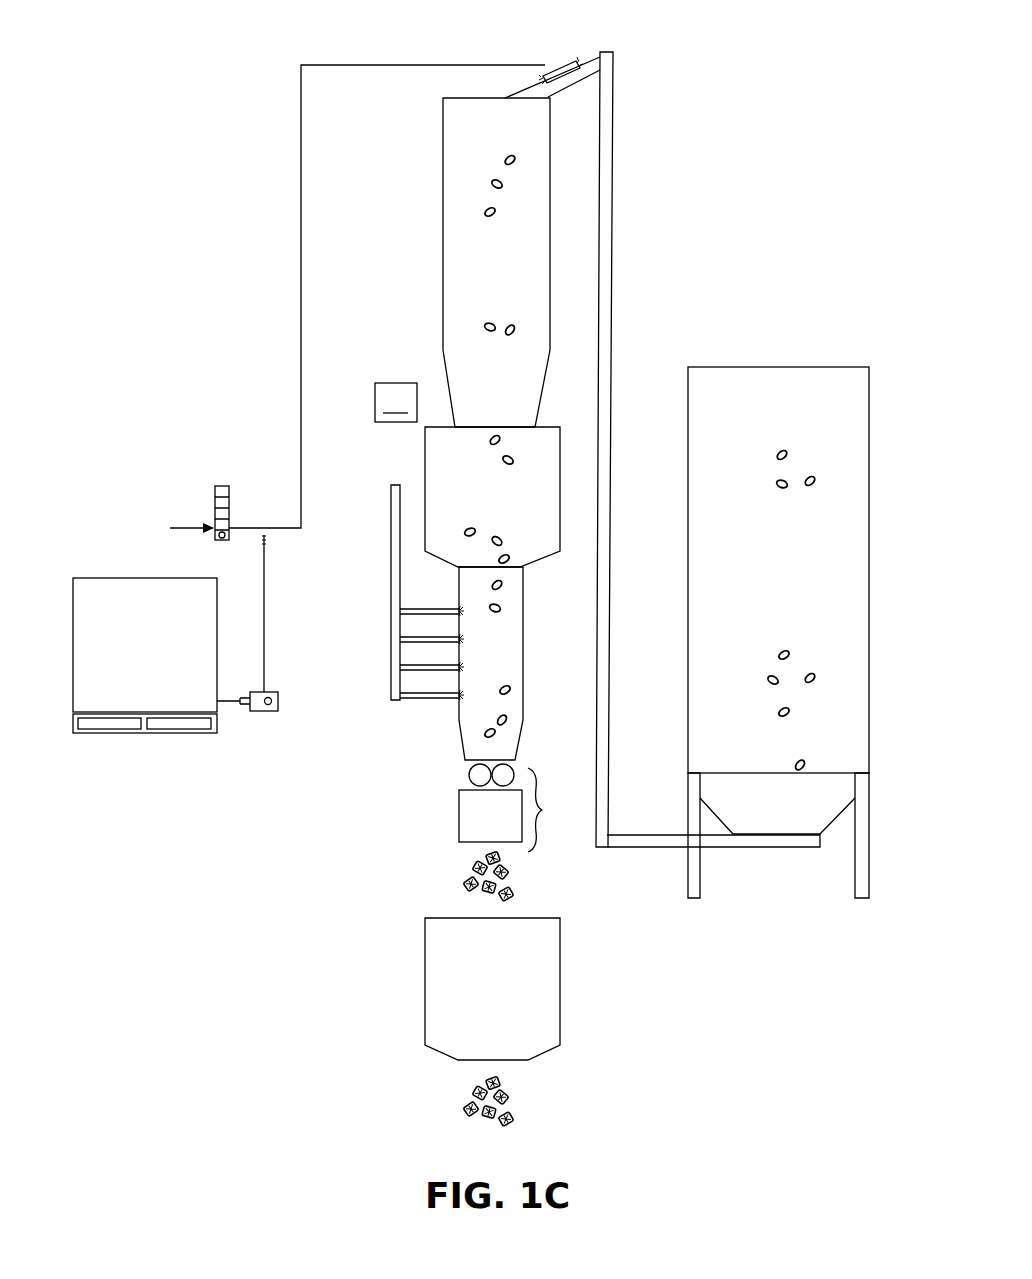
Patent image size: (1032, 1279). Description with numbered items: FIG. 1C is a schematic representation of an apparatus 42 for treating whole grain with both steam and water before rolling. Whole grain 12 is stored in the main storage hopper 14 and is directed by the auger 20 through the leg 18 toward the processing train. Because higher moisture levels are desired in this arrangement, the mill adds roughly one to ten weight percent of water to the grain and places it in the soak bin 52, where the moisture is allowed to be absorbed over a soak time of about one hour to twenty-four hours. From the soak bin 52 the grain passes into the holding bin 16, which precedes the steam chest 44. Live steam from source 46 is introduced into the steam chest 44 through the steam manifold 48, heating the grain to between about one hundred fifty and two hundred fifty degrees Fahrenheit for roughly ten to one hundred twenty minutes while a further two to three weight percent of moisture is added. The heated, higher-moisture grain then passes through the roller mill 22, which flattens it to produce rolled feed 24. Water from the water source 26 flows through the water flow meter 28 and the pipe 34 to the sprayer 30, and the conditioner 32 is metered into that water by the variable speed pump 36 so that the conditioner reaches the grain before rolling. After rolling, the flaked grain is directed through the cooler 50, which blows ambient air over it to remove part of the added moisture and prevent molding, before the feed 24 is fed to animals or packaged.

The whole grain 12 is at (770, 452).
The main storage hopper 14 is at (685, 524).
The holding bin 16 is at (536, 570).
The leg 18 is at (627, 449).
The auger 20 is at (779, 851).
The roller mill 22 is at (543, 814).
The rolled feed 24 is at (460, 1105).
The water source 26 is at (108, 560).
The water flow meter 28 is at (220, 482).
The sprayer 30 is at (566, 60).
The conditioner 32 is at (157, 688).
The pipe 34 is at (309, 260).
The variable speed pump 36 is at (265, 715).
The apparatus 42 is at (626, 449).
The steam chest 44 is at (530, 723).
The live steam source 46 is at (396, 458).
The steam manifold 48 is at (389, 620).
The cooler 50 is at (505, 1019).
The soak bin 52 is at (506, 290).